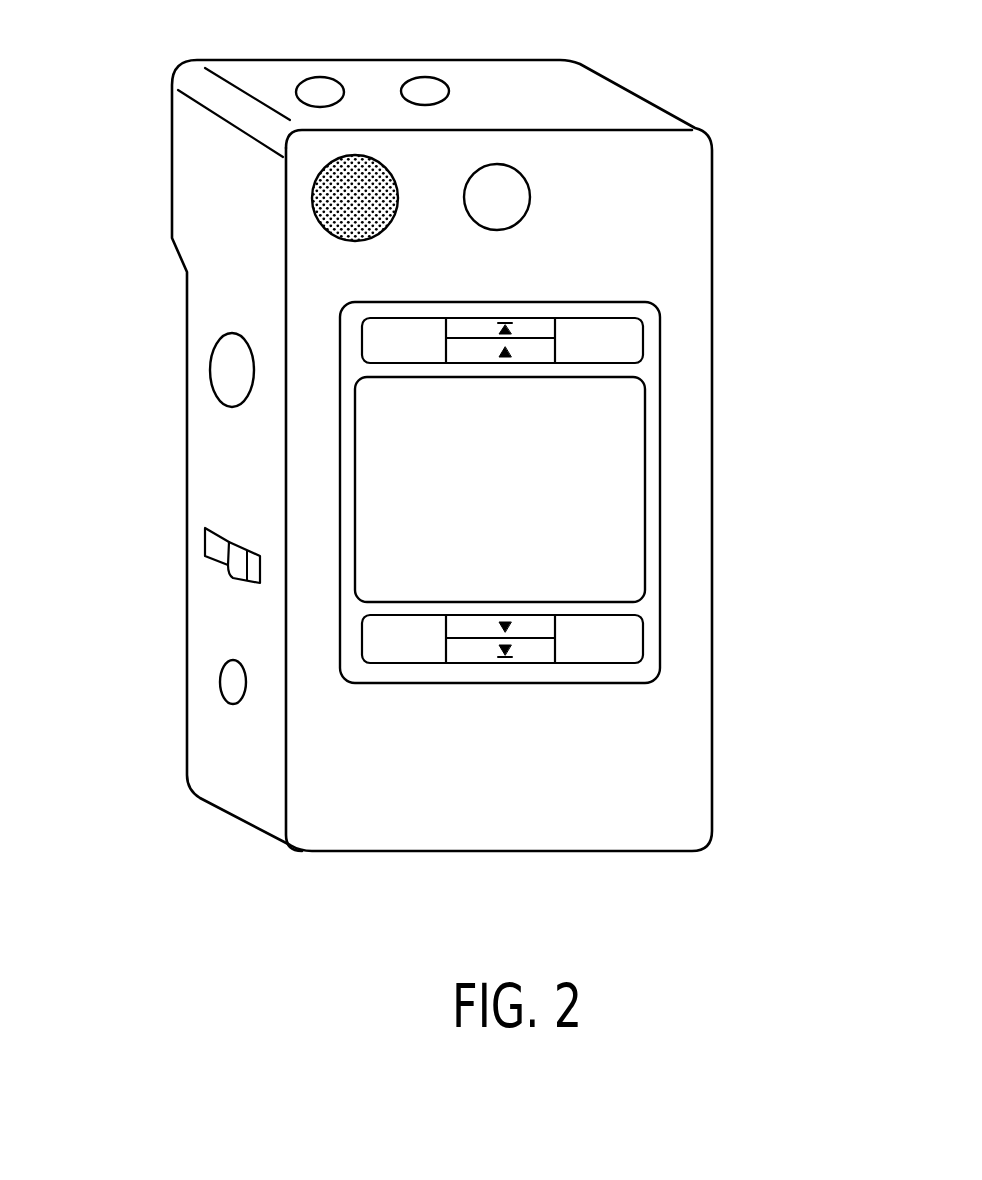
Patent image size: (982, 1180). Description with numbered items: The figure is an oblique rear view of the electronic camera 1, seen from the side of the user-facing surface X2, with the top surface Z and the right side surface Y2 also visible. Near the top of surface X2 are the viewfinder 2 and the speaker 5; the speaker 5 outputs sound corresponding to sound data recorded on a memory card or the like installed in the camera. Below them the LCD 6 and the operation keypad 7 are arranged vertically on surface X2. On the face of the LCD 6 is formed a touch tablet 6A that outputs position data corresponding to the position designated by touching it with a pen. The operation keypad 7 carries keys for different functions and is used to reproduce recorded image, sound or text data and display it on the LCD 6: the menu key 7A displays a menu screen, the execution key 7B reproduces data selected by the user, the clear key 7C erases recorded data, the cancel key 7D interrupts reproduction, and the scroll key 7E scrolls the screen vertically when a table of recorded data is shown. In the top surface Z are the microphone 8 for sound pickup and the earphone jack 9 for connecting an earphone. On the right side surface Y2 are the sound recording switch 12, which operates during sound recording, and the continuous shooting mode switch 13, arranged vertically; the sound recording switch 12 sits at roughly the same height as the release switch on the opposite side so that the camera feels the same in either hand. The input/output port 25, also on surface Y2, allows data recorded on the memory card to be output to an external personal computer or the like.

The electronic camera 1 is at (673, 852).
The viewfinder 2 is at (530, 207).
The speaker 5 is at (385, 225).
The LCD 6 is at (332, 489).
The touch tablet 6A is at (382, 502).
The operation keypad 7 is at (453, 457).
The menu key 7A is at (413, 663).
The execution key 7B is at (691, 566).
The clear key 7C is at (407, 317).
The cancel key 7D is at (607, 365).
The scroll key 7E is at (525, 625).
The microphone 8 is at (440, 77).
The earphone jack 9 is at (321, 77).
The sound recording switch 12 is at (213, 358).
The continuous shooting mode switch 13 is at (230, 578).
The input/output port 25 is at (233, 704).
The top surface Z is at (548, 72).
The right side surface Y2 is at (185, 145).
The surface facing the user X2 is at (687, 787).